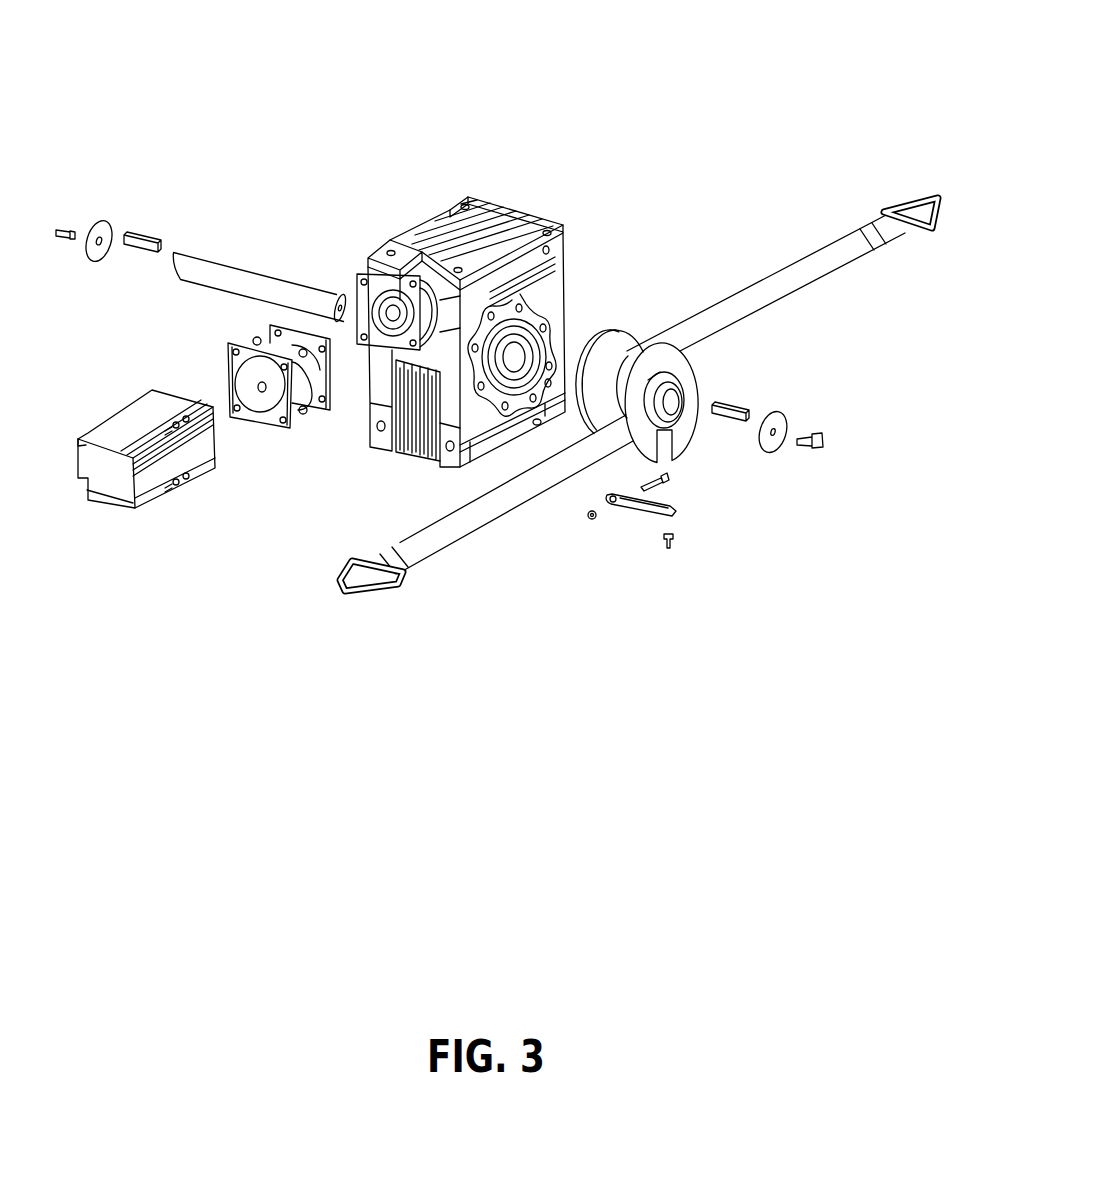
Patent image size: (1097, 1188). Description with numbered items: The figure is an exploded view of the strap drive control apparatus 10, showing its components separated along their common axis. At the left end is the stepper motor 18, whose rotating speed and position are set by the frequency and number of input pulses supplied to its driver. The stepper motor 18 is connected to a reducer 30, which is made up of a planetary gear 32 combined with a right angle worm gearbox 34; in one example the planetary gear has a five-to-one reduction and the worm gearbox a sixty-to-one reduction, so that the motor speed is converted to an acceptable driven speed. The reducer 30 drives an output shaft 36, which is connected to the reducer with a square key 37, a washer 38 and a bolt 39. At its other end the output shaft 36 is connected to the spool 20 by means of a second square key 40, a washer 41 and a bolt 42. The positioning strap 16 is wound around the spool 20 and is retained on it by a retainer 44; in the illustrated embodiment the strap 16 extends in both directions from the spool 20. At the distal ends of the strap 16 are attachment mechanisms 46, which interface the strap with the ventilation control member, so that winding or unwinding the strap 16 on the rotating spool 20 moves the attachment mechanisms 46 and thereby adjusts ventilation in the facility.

The strap drive control apparatus 10 is at (574, 90).
The positioning strap 16 is at (472, 533).
The stepper motor 18 is at (165, 497).
The spool 20 is at (700, 384).
The reducer 30 is at (426, 158).
The planetary gear 32 is at (292, 425).
The right angle worm gearbox 34 is at (561, 243).
The output shaft 36 is at (267, 278).
The square key 37 is at (150, 236).
The washer 38 is at (114, 230).
The bolt 39 is at (67, 226).
The square key 40 is at (743, 400).
The washer 41 is at (787, 417).
The bolt 42 is at (813, 436).
The retainer 44 is at (637, 510).
The attachment mechanisms 46 is at (373, 588).